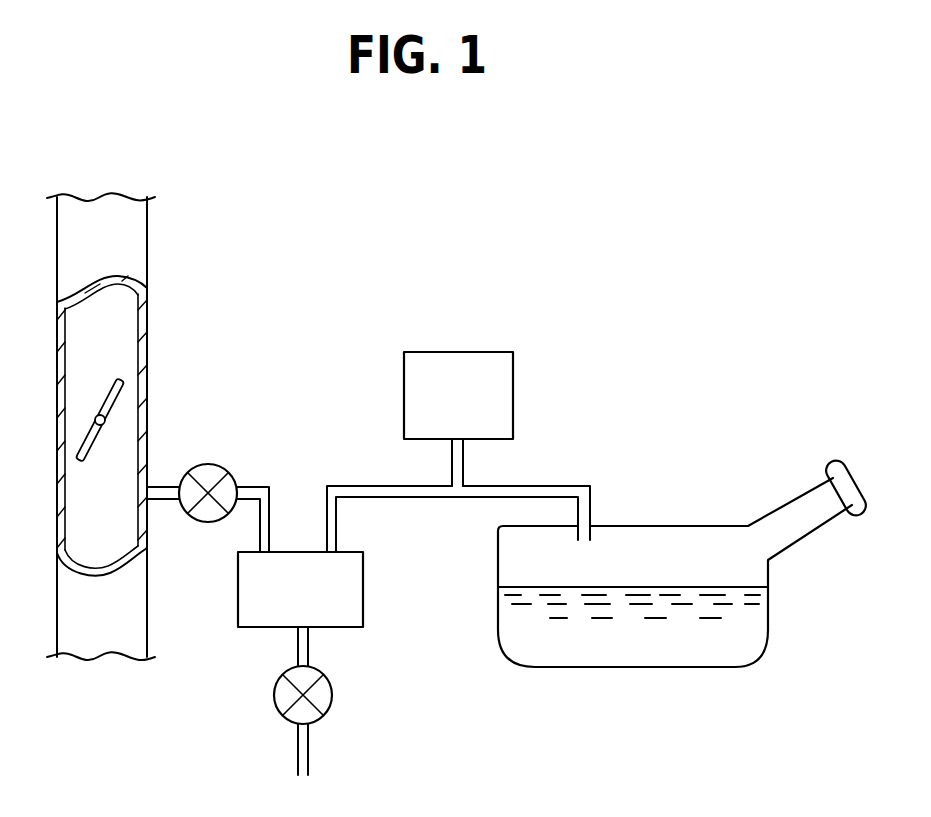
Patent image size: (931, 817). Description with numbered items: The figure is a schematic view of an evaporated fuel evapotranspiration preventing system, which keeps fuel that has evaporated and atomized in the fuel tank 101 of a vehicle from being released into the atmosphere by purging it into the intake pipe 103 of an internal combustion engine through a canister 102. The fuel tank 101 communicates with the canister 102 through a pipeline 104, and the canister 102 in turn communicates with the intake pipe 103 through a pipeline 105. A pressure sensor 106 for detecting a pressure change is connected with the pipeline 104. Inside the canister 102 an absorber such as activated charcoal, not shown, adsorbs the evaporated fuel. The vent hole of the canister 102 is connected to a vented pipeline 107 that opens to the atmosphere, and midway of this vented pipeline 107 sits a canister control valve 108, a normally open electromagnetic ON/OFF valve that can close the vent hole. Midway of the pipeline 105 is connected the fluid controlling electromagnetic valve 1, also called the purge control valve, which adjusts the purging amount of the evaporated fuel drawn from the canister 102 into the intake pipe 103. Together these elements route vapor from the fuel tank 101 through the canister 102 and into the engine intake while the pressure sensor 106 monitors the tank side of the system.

The fluid controlling electromagnetic valve 1 is at (204, 466).
The fuel tank 101 is at (622, 668).
The canister 102 is at (345, 582).
The intake pipe 103 is at (147, 340).
The pipeline 104 is at (543, 486).
The pipeline 105 is at (259, 487).
The pressure sensor 106 is at (460, 368).
The vented pipeline 107 is at (308, 752).
The canister control valve 108 is at (322, 699).